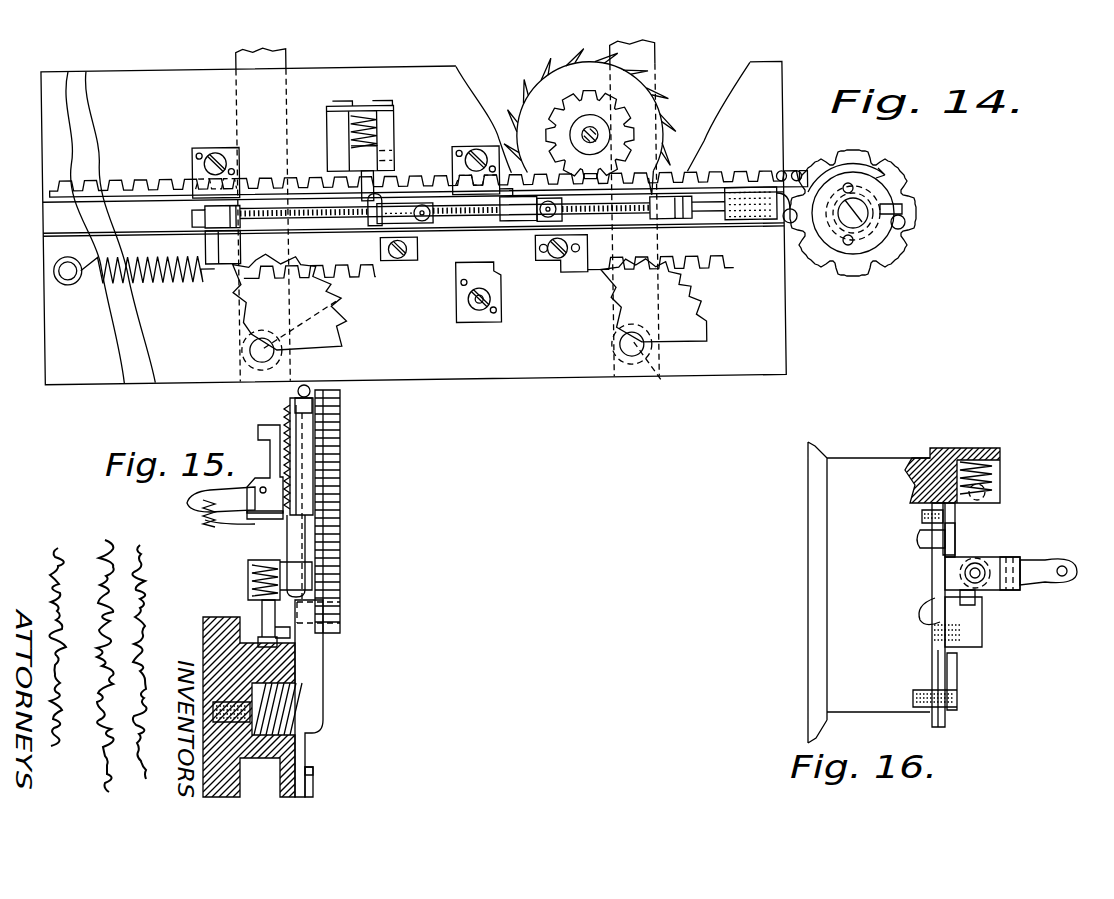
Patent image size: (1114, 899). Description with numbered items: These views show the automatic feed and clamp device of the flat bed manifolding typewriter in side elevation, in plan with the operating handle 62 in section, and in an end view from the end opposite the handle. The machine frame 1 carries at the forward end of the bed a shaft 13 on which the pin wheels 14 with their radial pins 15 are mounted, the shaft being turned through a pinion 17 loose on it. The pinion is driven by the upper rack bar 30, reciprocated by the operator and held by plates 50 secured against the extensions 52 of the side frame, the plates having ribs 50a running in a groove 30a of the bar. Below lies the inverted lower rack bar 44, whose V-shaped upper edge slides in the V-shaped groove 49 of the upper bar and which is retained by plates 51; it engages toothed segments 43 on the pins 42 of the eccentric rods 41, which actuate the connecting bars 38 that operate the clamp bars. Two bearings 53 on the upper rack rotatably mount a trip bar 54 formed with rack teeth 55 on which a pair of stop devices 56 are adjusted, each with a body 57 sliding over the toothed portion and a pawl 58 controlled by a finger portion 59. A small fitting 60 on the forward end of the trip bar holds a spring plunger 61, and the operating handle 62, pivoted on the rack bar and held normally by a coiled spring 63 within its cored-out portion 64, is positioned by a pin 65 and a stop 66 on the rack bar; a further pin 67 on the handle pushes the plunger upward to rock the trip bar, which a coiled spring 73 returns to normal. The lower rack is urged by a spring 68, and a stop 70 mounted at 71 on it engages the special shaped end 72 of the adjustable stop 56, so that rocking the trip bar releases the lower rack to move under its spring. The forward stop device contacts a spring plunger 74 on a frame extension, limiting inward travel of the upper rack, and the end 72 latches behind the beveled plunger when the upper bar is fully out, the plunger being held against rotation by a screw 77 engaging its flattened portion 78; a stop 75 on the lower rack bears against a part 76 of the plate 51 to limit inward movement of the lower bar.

In FIG. 14, the machine frame 1 is at (770, 344).
In FIG. 14, the shaft 13 is at (601, 130).
In FIG. 14, the pin wheels 14 is at (582, 60).
In FIG. 14, the radial pins 15 is at (553, 72).
In FIG. 14, the pinion 17 is at (549, 130).
In FIG. 14, the rack bar 30 is at (264, 184).
In FIG. 15, the rack bar 30 is at (341, 470).
In FIG. 16, the rack bar 30 is at (930, 585).
In FIG. 14, the groove 30a is at (303, 195).
In FIG. 14, the connecting bars 38 is at (290, 60).
In FIG. 14, the eccentric rod 41 is at (474, 341).
In FIG. 14, the pins 42 is at (258, 352).
In FIG. 14, the toothed segments 43 is at (342, 340).
In FIG. 14, the rack bar 44 is at (365, 278).
In FIG. 16, the rack bar 44 is at (935, 652).
In FIG. 16, the V-shaped groove 49 is at (935, 602).
In FIG. 14, the plates 50 is at (477, 150).
In FIG. 16, the plates 50 is at (952, 538).
In FIG. 16, the ribs 50a is at (935, 545).
In FIG. 14, the plates 51 is at (458, 304).
In FIG. 16, the plates 51 is at (958, 672).
In FIG. 16, the extensions 52 is at (895, 703).
In FIG. 14, the bearings 53 is at (190, 214).
In FIG. 16, the bearings 53 is at (990, 578).
In FIG. 14, the trip bar 54 is at (588, 212).
In FIG. 15, the trip bar 54 is at (297, 535).
In FIG. 16, the trip bar 54 is at (980, 585).
In FIG. 14, the rack teeth 55 is at (295, 218).
In FIG. 15, the rack teeth 55 is at (293, 452).
In FIG. 14, the stop devices 56 is at (400, 222).
In FIG. 15, the stop devices 56 is at (262, 498).
In FIG. 16, the stop devices 56 is at (1005, 560).
In FIG. 15, the bodies 57 is at (314, 473).
In FIG. 14, the pawls 58 is at (548, 225).
In FIG. 15, the pawls 58 is at (258, 433).
In FIG. 15, the finger portions 59 is at (195, 508).
In FIG. 16, the finger portions 59 is at (1062, 561).
In FIG. 14, the fitting 60 is at (768, 226).
In FIG. 15, the fitting 60 is at (248, 578).
In FIG. 14, the spring plunger 61 is at (797, 175).
In FIG. 15, the spring plunger 61 is at (272, 612).
In FIG. 14, the operating handle 62 is at (893, 258).
In FIG. 15, the operating handle 62 is at (203, 620).
In FIG. 14, the coiled spring 63 is at (895, 190).
In FIG. 15, the coiled spring 63 is at (293, 692).
In FIG. 15, the cored-out portion 64 is at (275, 738).
In FIG. 14, the pin 65 is at (906, 224).
In FIG. 15, the pin 65 is at (314, 790).
In FIG. 14, the stop 66 is at (905, 210).
In FIG. 15, the stop 66 is at (315, 770).
In FIG. 14, the pin 67 is at (795, 228).
In FIG. 15, the pin 67 is at (324, 642).
In FIG. 14, the spring 68 is at (172, 282).
In FIG. 14, the stop 70 is at (395, 224).
In FIG. 14, the stop mounting 71 is at (416, 248).
In FIG. 16, the stop mounting 71 is at (938, 642).
In FIG. 14, the special shaped end 72 is at (384, 195).
In FIG. 16, the special shaped end 72 is at (925, 560).
In FIG. 14, the coiled spring 73 is at (240, 230).
In FIG. 14, the spring plunger 74 is at (376, 160).
In FIG. 16, the spring plunger 74 is at (973, 517).
In FIG. 14, the stop 75 is at (562, 275).
In FIG. 14, the part 76 is at (476, 325).
In FIG. 14, the screw 77 is at (385, 125).
In FIG. 16, the screw 77 is at (1000, 480).
In FIG. 14, the flattened portion 78 is at (364, 125).
In FIG. 16, the flattened portion 78 is at (962, 465).